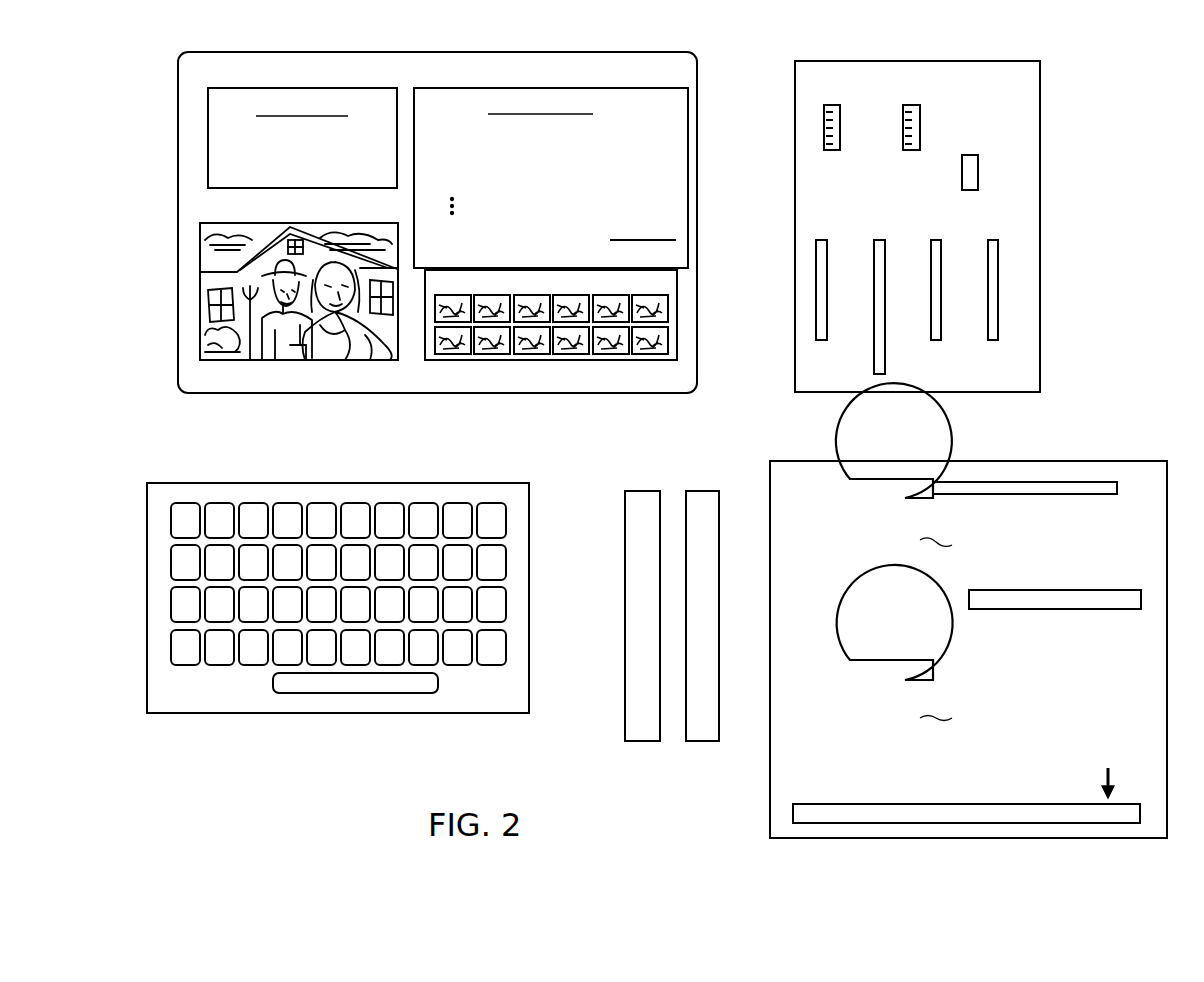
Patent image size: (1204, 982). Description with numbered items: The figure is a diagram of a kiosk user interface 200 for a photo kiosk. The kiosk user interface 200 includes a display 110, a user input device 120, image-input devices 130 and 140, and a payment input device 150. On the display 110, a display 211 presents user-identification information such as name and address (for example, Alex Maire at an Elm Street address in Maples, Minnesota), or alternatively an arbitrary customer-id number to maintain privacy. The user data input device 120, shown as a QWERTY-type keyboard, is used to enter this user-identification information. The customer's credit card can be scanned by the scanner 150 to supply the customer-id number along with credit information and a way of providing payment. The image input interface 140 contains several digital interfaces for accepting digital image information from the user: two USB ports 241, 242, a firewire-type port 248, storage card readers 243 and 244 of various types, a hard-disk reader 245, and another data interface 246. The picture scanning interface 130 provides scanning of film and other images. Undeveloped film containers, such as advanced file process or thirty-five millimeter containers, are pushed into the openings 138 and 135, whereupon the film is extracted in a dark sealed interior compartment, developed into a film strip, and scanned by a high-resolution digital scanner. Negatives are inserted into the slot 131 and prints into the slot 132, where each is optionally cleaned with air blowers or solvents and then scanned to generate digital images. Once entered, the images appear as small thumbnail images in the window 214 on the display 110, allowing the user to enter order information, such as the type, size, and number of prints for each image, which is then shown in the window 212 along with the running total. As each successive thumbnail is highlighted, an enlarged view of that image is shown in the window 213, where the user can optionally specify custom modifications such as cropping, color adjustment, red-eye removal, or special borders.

The kiosk user interface 200 is at (1146, 86).
The display 110 is at (697, 70).
The display 211 is at (295, 88).
The window 212 is at (443, 88).
The window 213 is at (280, 360).
The window 214 is at (524, 360).
The image input interface 140 is at (1040, 86).
The USB port 241 is at (840, 118).
The USB port 242 is at (920, 116).
The firewire-type port 248 is at (978, 172).
The storage card reader 243 is at (827, 330).
The storage card reader 244 is at (885, 355).
The hard-disk reader 245 is at (941, 325).
The data interface 246 is at (998, 325).
The user input device 120 is at (455, 483).
The payment input device 150 is at (641, 741).
The picture scanning interface 130 is at (846, 452).
The opening 138 is at (858, 595).
The slot 131 is at (1070, 589).
The opening 135 is at (897, 765).
The slot 132 is at (983, 803).